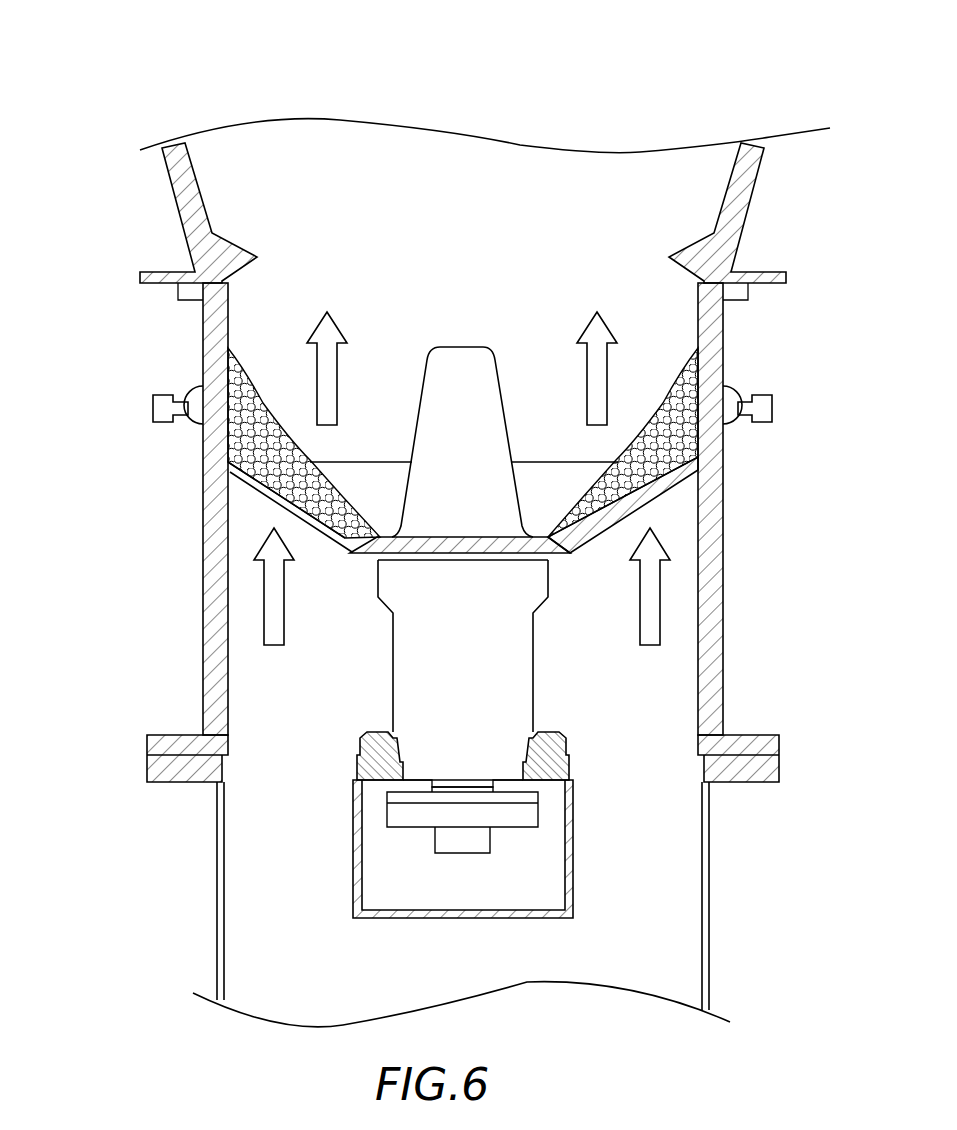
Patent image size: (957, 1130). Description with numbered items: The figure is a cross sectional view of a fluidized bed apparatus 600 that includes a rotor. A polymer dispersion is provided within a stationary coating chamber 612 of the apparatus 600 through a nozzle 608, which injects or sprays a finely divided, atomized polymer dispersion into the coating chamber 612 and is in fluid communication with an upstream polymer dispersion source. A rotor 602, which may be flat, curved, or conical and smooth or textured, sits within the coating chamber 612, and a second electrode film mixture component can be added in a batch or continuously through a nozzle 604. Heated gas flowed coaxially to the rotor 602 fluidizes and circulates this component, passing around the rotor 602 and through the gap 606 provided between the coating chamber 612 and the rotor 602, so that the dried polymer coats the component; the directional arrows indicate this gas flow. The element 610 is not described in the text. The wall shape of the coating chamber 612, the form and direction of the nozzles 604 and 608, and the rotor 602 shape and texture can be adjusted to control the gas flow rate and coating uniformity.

The fluidized bed apparatus 600 is at (115, 88).
The rotor 602 is at (534, 524).
The nozzle 604 is at (773, 405).
The gap 606 is at (693, 482).
The nozzle 608 is at (153, 403).
The scraper blade 610 is at (228, 466).
The coating chamber 612 is at (729, 326).